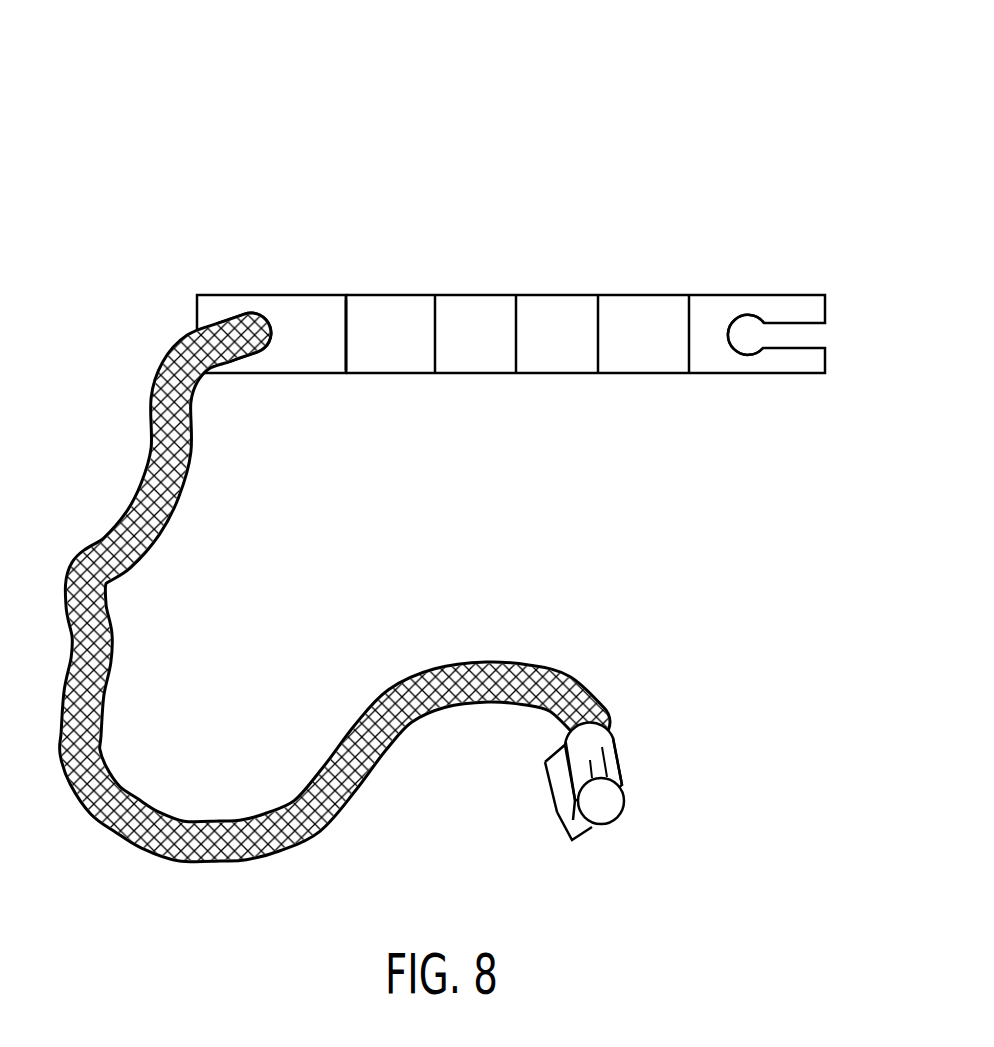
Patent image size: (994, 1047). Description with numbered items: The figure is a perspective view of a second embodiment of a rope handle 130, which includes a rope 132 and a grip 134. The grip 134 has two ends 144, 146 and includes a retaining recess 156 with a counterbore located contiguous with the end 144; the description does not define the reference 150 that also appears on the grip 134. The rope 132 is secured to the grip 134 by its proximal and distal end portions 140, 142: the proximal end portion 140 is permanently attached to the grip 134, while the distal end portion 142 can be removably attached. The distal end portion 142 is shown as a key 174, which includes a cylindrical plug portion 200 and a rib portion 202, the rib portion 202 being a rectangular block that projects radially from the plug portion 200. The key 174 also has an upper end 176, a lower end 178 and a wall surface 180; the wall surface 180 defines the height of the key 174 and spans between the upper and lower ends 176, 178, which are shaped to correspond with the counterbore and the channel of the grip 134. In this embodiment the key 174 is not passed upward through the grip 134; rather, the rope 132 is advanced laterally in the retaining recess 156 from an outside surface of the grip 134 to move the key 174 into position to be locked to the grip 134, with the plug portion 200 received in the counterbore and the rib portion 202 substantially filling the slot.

The rope handle 130 is at (350, 110).
The rope 132 is at (335, 534).
The grip 134 is at (475, 322).
The proximal end portion 140 is at (267, 313).
The distal end portion 142 is at (562, 745).
The end 144 is at (838, 297).
The end 146 is at (197, 309).
The bar segment 150 is at (332, 342).
The retaining recess 156 is at (747, 347).
The key 174 is at (620, 775).
The upper end 176 is at (605, 808).
The lower end 178 is at (610, 730).
The wall surface 180 is at (578, 767).
The plug portion 200 is at (615, 758).
The rib portion 202 is at (568, 807).